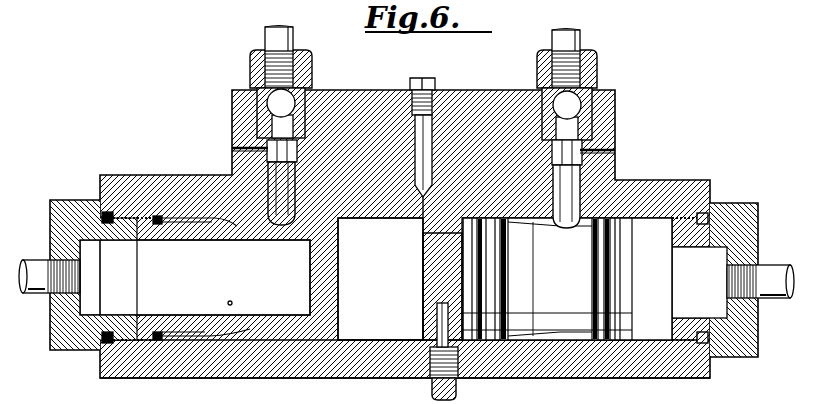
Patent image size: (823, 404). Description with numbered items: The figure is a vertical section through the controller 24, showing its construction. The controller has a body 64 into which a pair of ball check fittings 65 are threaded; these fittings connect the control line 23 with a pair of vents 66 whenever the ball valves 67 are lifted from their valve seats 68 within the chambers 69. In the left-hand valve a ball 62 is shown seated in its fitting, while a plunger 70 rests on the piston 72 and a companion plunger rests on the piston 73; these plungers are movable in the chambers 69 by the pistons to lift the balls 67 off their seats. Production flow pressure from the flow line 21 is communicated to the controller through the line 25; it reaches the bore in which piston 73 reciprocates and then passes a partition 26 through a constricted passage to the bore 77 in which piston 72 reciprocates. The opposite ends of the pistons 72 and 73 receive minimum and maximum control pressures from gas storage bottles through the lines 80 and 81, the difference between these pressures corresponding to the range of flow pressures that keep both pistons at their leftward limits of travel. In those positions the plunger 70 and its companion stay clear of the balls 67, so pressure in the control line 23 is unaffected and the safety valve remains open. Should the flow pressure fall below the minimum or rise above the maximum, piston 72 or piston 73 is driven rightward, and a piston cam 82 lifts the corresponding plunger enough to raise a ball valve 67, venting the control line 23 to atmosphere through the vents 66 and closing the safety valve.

The production flow line 21 is at (553, 192).
The control line 23 is at (262, 38).
The controller 24 is at (436, 335).
The flow pressure line 25 is at (458, 283).
The partition block 26 is at (425, 234).
The ball valve 62 is at (295, 103).
The body 64 is at (365, 378).
The ball check fittings 65 is at (312, 70).
The vents 66 is at (230, 148).
The ball valves 67 is at (553, 106).
The valve seats 68 is at (300, 130).
The chambers 69 is at (297, 150).
The plunger 70 is at (295, 183).
The piston 72 is at (225, 233).
The piston 73 is at (630, 279).
The bore 77 is at (352, 340).
The line 80 is at (40, 295).
The line 81 is at (790, 300).
The piston cam 82 is at (210, 226).